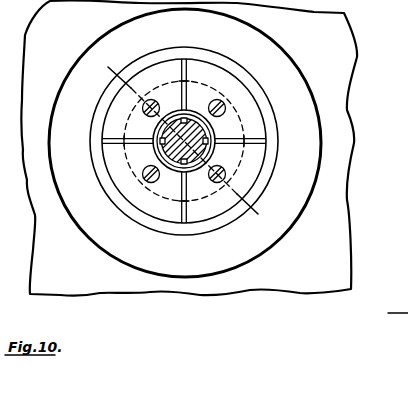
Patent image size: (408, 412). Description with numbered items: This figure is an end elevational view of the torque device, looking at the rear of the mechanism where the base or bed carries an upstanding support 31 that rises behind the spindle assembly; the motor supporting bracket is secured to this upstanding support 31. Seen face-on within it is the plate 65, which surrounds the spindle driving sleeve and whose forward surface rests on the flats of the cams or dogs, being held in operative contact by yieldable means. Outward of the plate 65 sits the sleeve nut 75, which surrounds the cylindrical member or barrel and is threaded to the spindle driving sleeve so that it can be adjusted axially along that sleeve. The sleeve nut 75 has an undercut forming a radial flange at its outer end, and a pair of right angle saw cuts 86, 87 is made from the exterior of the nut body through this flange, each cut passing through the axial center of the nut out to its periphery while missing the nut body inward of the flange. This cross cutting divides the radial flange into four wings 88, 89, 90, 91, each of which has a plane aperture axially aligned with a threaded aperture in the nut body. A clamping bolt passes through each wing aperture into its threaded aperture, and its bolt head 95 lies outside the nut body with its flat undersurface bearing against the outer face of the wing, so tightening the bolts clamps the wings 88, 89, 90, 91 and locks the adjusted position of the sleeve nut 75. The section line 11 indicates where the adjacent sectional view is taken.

The upstanding support 31 is at (341, 85).
The plate 65 is at (254, 82).
The sleeve nut 75 is at (158, 62).
The saw cut 86 is at (187, 68).
The saw cut 87 is at (110, 163).
The wing 88 is at (237, 116).
The wing 89 is at (235, 167).
The wing 90 is at (159, 188).
The wing 91 is at (128, 118).
The bolt head 95 is at (215, 182).
The section line 11- 11 is at (119, 55).